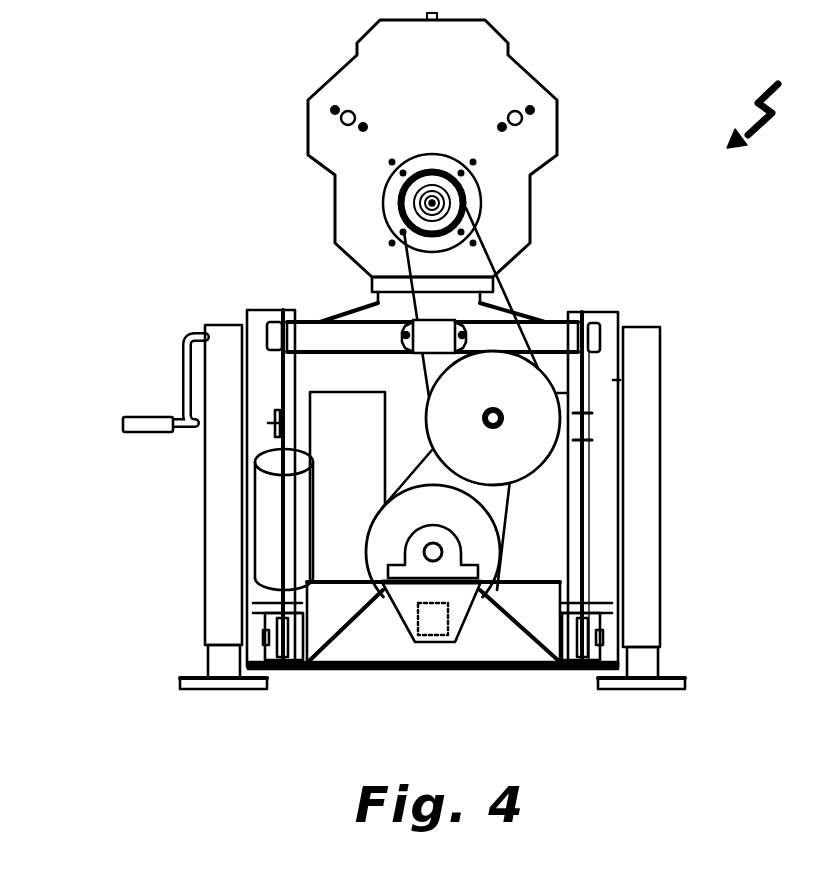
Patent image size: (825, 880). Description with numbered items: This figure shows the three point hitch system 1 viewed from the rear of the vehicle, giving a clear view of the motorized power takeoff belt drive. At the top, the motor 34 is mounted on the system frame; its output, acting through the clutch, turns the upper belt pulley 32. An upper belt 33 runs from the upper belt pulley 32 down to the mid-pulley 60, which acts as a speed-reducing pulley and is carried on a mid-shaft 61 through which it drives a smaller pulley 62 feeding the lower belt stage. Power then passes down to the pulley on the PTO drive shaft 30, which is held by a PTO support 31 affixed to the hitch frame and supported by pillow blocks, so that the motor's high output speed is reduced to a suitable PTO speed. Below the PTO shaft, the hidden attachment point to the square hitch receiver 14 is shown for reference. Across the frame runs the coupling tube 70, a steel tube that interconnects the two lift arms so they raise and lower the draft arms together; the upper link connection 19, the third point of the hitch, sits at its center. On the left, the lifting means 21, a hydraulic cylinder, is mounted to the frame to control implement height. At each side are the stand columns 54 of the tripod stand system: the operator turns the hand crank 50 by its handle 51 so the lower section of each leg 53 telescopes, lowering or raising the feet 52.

The apparatus 1 is at (765, 107).
The square hitch receiver 14 is at (437, 625).
The upper link connection 19 is at (420, 328).
The lifting means 21 is at (270, 520).
The PTO drive shaft 30 is at (428, 553).
The PTO support 31 is at (417, 593).
The upper belt pulley 32 is at (400, 200).
The upper belt 33 is at (483, 243).
The motor 34 is at (458, 83).
The hand crank 50 is at (178, 348).
The handle 51 is at (143, 421).
The lowerable feet 52 is at (230, 685).
The leg 53 is at (220, 660).
The column 54 is at (222, 603).
The mid-pulley 60 is at (528, 380).
The mid-shaft 61 is at (500, 397).
The lower pulley 62 is at (377, 550).
The coupling tube 70 is at (335, 320).